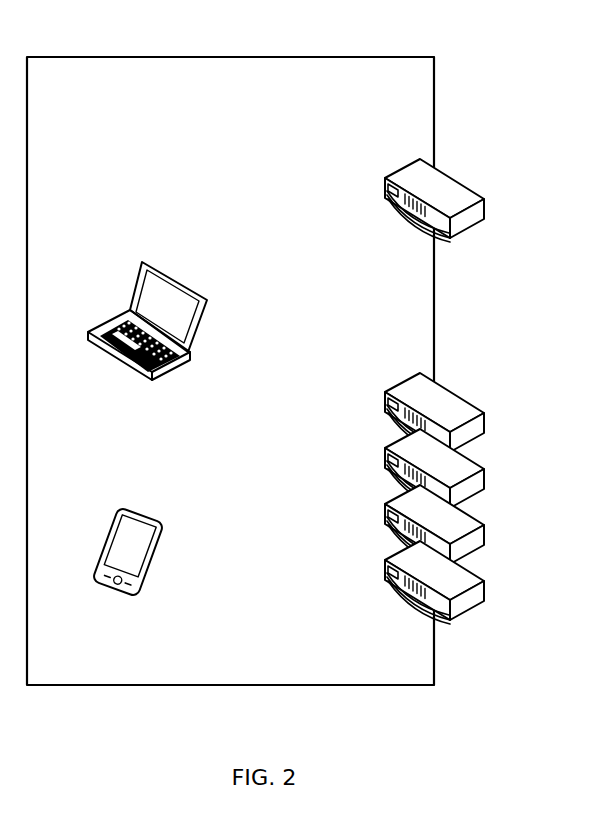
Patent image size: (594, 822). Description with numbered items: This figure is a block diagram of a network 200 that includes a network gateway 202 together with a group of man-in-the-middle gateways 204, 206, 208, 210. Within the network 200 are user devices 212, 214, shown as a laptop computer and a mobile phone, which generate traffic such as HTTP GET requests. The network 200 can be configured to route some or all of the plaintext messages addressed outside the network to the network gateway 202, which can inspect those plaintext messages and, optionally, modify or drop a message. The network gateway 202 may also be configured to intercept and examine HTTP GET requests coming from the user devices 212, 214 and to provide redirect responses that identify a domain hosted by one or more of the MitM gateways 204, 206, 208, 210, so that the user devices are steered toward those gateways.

The network 200 is at (230, 57).
The network gateway 202 is at (447, 172).
The MitM gateway 204 is at (485, 429).
The MitM gateway 206 is at (485, 485).
The MitM gateway 208 is at (485, 541).
The MitM gateway 210 is at (485, 597).
The user device 212 is at (177, 275).
The user device 214 is at (152, 512).